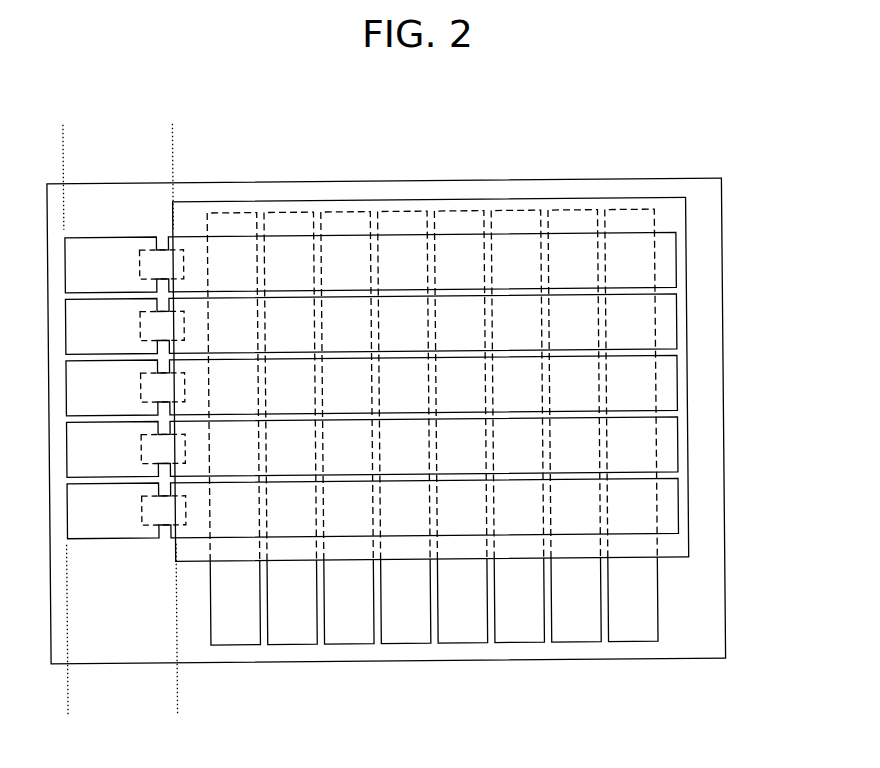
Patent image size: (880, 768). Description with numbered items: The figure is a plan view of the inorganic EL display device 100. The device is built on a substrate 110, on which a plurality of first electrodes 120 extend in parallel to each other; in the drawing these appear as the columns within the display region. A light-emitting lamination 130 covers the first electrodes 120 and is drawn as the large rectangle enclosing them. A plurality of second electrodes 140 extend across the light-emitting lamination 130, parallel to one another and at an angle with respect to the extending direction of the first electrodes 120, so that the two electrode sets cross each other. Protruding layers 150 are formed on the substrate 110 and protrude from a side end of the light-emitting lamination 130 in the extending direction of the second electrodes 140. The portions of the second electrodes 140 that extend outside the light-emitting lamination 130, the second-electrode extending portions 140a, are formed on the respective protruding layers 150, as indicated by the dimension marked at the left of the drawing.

The inorganic EL display device 100 is at (562, 133).
The substrate 110 is at (724, 633).
The first electrodes 120 is at (657, 593).
The light-emitting lamination 130 is at (687, 449).
The second electrodes 140 is at (677, 383).
The second-electrode extending portions 140a is at (66, 141).
The protruding layers 150 is at (152, 525).